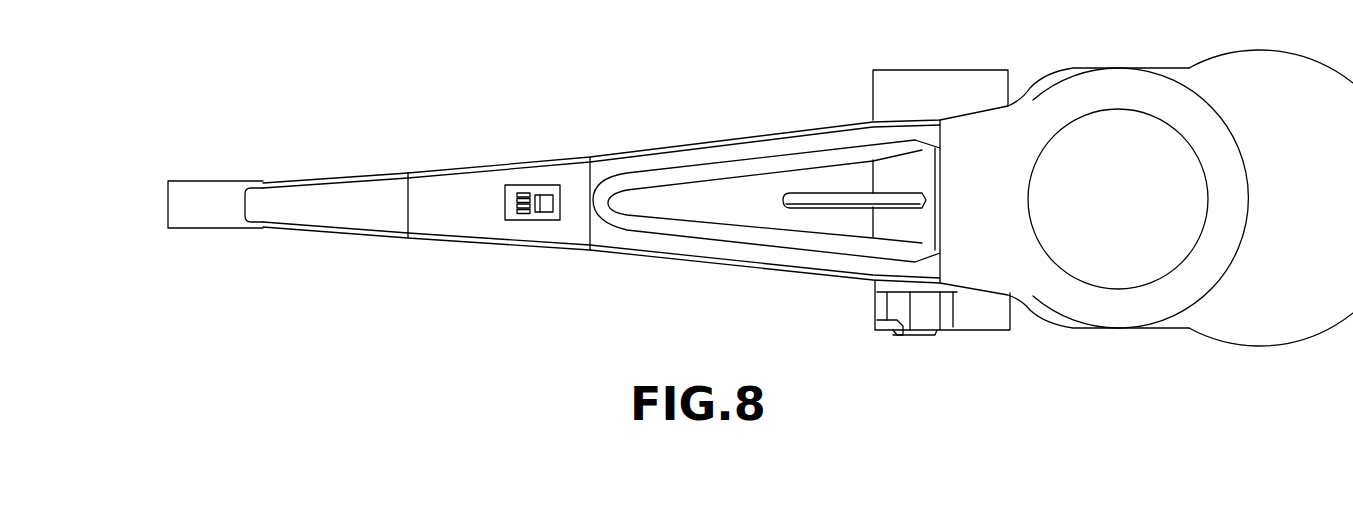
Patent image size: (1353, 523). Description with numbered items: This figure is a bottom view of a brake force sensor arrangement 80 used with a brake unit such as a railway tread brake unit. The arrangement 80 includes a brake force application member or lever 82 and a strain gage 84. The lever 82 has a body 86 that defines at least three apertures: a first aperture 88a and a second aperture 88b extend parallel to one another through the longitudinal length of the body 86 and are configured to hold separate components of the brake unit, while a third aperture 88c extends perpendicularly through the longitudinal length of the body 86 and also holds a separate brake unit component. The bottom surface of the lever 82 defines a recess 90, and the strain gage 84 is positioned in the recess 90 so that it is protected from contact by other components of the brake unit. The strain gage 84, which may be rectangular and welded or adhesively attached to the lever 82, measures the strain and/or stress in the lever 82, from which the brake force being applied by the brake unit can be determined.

The brake force sensor arrangement 80 is at (568, 101).
The brake force application member or lever 82 is at (817, 284).
The strain gage 84 is at (510, 190).
The body 86 is at (715, 148).
The first aperture 88a is at (225, 229).
The second aperture 88b is at (918, 68).
The third aperture 88c is at (1167, 170).
The recess 90 is at (447, 183).